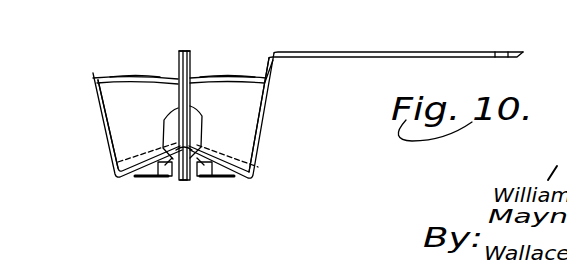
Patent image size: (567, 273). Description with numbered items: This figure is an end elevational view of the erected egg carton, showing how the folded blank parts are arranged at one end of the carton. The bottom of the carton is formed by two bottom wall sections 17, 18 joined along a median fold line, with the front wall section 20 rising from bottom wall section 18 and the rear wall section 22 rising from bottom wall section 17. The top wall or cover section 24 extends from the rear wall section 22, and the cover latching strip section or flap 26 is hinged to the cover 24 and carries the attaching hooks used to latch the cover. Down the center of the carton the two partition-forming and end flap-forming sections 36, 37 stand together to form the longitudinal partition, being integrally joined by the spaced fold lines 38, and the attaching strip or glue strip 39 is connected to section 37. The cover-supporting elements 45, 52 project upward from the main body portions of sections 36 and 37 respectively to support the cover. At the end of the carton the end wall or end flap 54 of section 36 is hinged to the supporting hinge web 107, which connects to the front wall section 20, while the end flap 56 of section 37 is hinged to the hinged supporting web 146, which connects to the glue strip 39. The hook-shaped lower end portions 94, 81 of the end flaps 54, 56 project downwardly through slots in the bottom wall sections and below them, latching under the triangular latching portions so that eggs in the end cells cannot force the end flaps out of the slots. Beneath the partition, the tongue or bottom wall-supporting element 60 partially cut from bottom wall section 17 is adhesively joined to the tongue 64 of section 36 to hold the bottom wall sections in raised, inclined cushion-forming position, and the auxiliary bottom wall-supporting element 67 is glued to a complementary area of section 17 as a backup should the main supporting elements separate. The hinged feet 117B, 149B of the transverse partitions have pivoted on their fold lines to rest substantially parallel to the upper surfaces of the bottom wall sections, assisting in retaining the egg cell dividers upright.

The bottom wall section 17 is at (224, 177).
The bottom wall section 18 is at (148, 177).
The front wall section 20 is at (98, 121).
The rear wall section 22 is at (266, 132).
The top wall or cover section 24 is at (412, 41).
The cover latching strip section or flap 26 is at (514, 52).
The center partition-forming, transverse partition-forming and end flap-forming sect 36 is at (176, 97).
The center partition-forming, transverse partition-forming and end flap-forming sect 37 is at (192, 95).
The fold lines 38 is at (160, 147).
The attaching strip or glue strip 39 is at (270, 57).
The cover-supporting element 45 is at (178, 57).
The cover-supporting element 52 is at (191, 55).
The end wall or end flap 54 is at (126, 131).
The end wall or end flap 56 is at (232, 150).
The tongue or bottom wall-supporting element 60 is at (180, 181).
The tongue or bottom wall-supporting element 64 is at (182, 184).
The auxiliary bottom wall-supporting element 67 is at (193, 146).
The hook-shaped lower end portion 81 is at (198, 175).
The hook-shaped lower end portion 94 is at (162, 176).
The supporting hinge web 107 is at (147, 62).
The hinged foot portion 117B is at (104, 161).
The hinged supporting web 146 is at (230, 68).
The hinged foot portion 149B is at (262, 170).